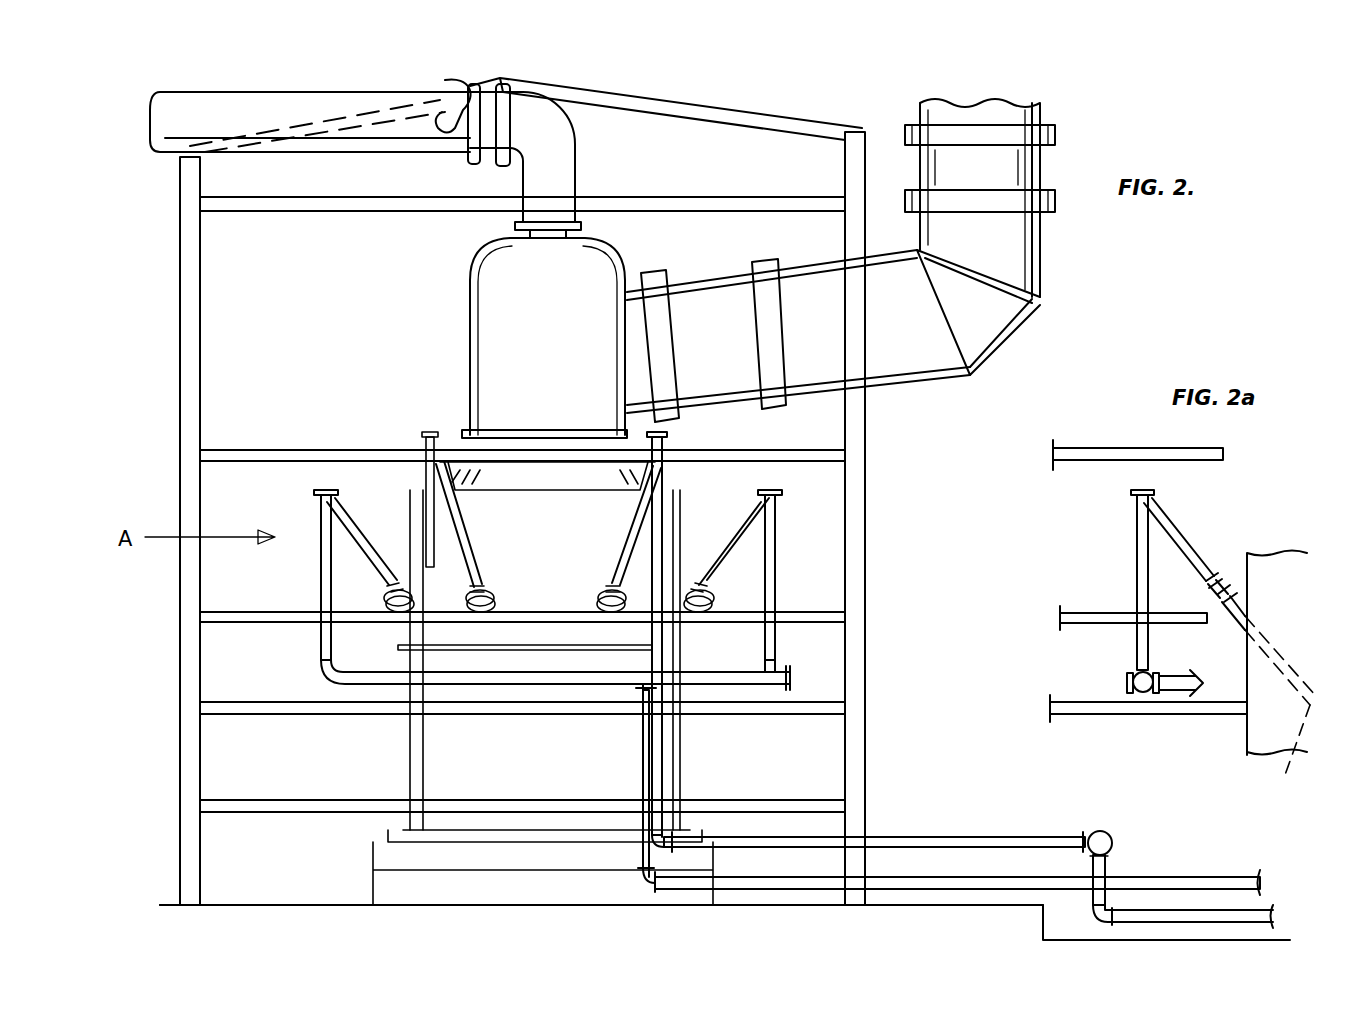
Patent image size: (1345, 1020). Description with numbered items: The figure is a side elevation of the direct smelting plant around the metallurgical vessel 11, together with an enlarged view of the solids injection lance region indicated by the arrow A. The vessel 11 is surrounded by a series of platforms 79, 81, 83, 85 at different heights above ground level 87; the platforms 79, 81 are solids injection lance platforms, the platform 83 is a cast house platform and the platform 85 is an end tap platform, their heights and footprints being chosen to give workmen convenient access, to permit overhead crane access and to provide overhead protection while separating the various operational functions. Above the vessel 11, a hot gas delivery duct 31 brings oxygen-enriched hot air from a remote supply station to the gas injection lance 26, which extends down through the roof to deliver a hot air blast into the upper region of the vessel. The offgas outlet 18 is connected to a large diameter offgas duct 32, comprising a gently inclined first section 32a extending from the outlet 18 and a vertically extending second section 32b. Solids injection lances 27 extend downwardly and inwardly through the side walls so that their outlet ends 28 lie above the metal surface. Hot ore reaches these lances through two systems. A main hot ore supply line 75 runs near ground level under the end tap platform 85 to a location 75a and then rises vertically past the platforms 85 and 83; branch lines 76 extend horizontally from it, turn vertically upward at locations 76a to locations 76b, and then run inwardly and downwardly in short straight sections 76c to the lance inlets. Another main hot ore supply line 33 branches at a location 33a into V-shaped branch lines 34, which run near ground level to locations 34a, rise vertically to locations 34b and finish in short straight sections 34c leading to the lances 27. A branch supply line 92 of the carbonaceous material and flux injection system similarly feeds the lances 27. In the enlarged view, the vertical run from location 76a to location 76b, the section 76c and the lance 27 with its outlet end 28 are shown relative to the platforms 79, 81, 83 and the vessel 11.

In FIG. 2, the metallurgical vessel 11 is at (525, 452).
In FIG. 2A, the metallurgical vessel 11 is at (1265, 553).
In FIG. 2, the offgas outlet 18 is at (612, 336).
In FIG. 2, the gas injection lance 26 is at (582, 178).
In FIG. 2, the solids injection lance 27 is at (610, 595).
In FIG. 2A, the solids injection lance 27 is at (1262, 648).
In FIG. 2A, the outlet end 28 is at (1289, 753).
In FIG. 2, the hot gas delivery duct 31 is at (300, 145).
In FIG. 2, the offgas duct 32 is at (793, 255).
In FIG. 2, the first section of the offgas duct 32a is at (724, 358).
In FIG. 2, the second section of the offgas duct 32b is at (1010, 257).
In FIG. 2, the main hot ore supply line 33 is at (1160, 905).
In FIG. 2, the branching location 33a is at (1108, 838).
In FIG. 2, the branch line 34 is at (1000, 837).
In FIG. 2, the branch line vertical rise location 34a is at (672, 840).
In FIG. 2, the branch line upper location 34b is at (665, 440).
In FIG. 2, the short straight section 34c is at (622, 530).
In FIG. 2, the main hot ore supply line 75 is at (905, 877).
In FIG. 2, the main supply line vertical rise location 75a is at (640, 878).
In FIG. 2, the branch line 76 is at (708, 684).
In FIG. 2A, the branch line 76 is at (1190, 690).
In FIG. 2, the branch line vertical rise location 76a is at (326, 555).
In FIG. 2A, the branch line vertical rise location 76a is at (1137, 566).
In FIG. 2, the branch line upper location 76b is at (318, 493).
In FIG. 2A, the branch line upper location 76b is at (1137, 510).
In FIG. 2, the short straight section 76c is at (340, 530).
In FIG. 2A, the short straight section 76c is at (1182, 545).
In FIG. 2, the solids injection lance platform 79 is at (236, 450).
In FIG. 2A, the solids injection lance platform 79 is at (1053, 456).
In FIG. 2, the solids injection lance platform 81 is at (226, 612).
In FIG. 2A, the solids injection lance platform 81 is at (1060, 619).
In FIG. 2, the cast house platform 83 is at (226, 705).
In FIG. 2A, the cast house platform 83 is at (1050, 708).
In FIG. 2, the end tap platform 85 is at (283, 805).
In FIG. 2, the ground level 87 is at (255, 905).
In FIG. 2, the branch supply line 92 is at (470, 545).